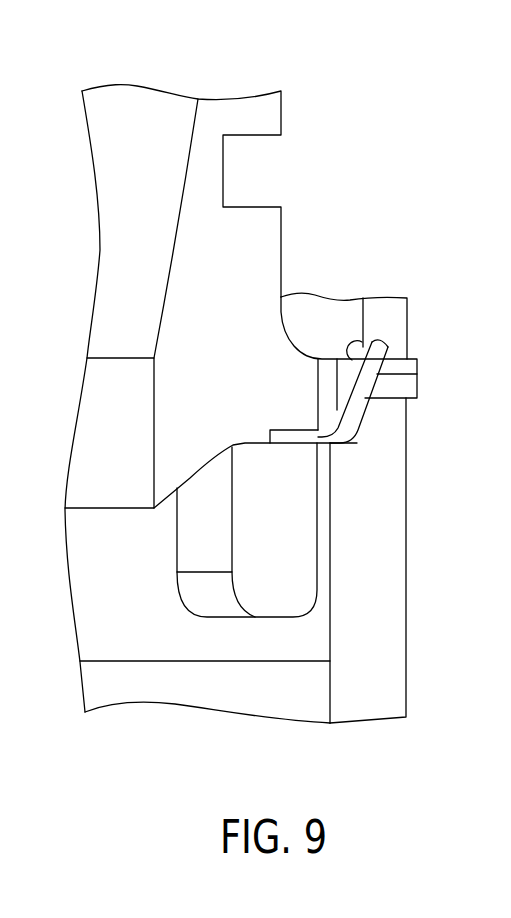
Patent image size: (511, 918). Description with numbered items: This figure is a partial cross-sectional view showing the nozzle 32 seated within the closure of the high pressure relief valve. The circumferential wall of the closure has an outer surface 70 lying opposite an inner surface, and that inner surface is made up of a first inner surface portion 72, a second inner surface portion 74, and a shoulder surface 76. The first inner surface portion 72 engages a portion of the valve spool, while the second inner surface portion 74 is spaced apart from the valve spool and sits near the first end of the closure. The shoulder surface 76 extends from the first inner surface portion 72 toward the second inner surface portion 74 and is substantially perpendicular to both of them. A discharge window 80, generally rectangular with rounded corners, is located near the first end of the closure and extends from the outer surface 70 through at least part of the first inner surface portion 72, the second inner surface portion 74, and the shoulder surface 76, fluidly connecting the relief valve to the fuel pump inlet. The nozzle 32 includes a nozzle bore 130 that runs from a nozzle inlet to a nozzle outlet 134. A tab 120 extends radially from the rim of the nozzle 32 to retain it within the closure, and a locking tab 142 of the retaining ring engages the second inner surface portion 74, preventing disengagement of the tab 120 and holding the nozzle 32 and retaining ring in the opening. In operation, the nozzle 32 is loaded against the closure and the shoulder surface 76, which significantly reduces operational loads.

The nozzle 32 is at (223, 120).
The nozzle bore 130 is at (190, 128).
The nozzle outlet 134 is at (158, 510).
The discharge window 80 is at (192, 593).
The tab 120 is at (390, 382).
The locking tab 142 is at (380, 335).
The second inner surface portion 74 is at (363, 418).
The shoulder surface 76 is at (347, 448).
The outer surface 70 is at (407, 660).
The first inner surface portion 72 is at (313, 553).